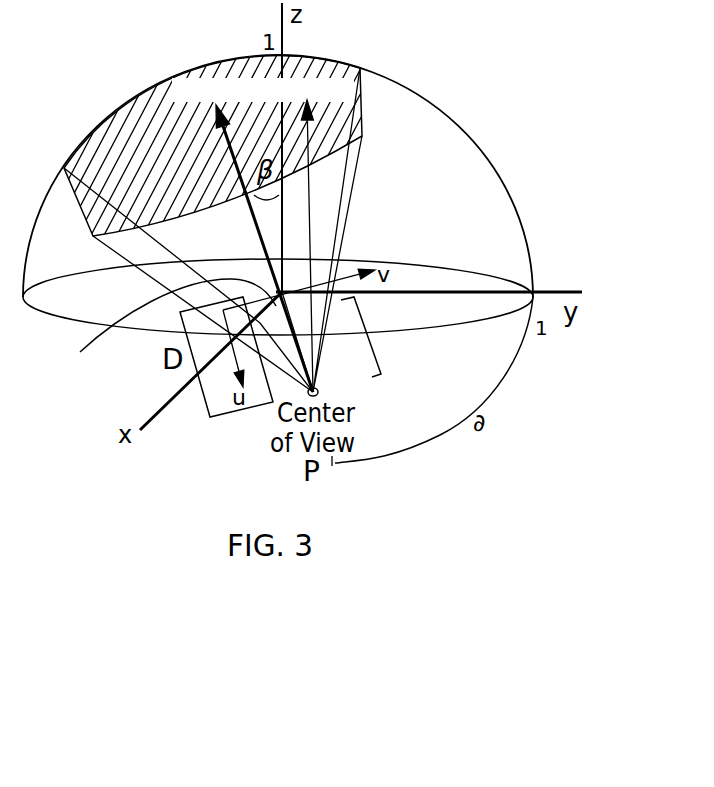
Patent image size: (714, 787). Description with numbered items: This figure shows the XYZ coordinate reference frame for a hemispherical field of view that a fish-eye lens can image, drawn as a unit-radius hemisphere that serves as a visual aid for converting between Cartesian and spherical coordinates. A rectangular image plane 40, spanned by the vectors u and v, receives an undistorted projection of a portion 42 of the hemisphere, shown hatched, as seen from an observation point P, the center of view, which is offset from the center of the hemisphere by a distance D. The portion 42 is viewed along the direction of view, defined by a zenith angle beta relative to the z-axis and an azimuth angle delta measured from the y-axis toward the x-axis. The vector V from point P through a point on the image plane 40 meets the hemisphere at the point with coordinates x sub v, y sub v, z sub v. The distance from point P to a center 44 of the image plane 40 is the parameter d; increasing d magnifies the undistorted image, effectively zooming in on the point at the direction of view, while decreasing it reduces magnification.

The image plane 40 is at (341, 302).
The portion of the hemisphere 42 is at (170, 49).
The center of the image plane 44 is at (161, 323).